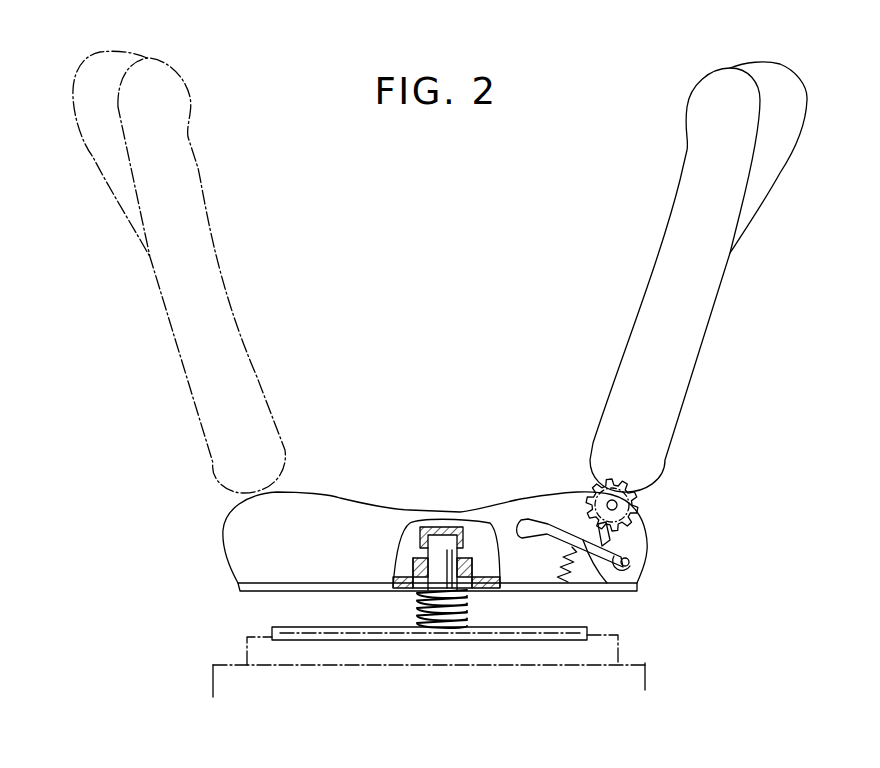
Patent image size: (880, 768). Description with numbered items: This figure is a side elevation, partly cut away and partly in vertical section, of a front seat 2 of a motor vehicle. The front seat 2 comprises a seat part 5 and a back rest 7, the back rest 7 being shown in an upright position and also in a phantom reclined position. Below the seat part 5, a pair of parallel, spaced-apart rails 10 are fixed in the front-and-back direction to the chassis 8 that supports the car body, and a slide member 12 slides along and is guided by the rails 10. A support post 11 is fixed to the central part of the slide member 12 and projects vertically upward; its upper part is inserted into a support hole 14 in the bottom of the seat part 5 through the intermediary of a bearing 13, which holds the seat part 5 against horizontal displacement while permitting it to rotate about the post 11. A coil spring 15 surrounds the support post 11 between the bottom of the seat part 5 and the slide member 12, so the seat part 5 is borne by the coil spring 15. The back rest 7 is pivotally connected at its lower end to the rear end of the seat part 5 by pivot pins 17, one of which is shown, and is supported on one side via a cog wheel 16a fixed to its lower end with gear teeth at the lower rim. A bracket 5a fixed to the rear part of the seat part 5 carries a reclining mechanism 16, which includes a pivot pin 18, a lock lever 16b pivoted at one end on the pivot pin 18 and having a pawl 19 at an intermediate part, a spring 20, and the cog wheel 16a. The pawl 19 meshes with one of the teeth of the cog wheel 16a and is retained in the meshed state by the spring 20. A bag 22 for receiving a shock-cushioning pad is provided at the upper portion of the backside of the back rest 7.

The front seat 2 is at (403, 358).
The seat part 5 is at (327, 507).
The bracket 5a is at (633, 573).
The back rest 7 is at (196, 172).
The chassis 8 is at (640, 677).
The rails 10 is at (620, 637).
The support post 11 is at (437, 580).
The slide member 12 is at (313, 630).
The bearing 13 is at (423, 570).
The support hole 14 is at (443, 536).
The coil spring 15 is at (473, 622).
The reclining mechanism 16 is at (627, 542).
The cog wheel 16a is at (640, 513).
The lock lever 16b is at (552, 525).
The pivot pins 17 is at (618, 503).
The pivot pin 18 is at (634, 562).
The pawl 19 is at (590, 532).
The spring 20 is at (560, 568).
The bag 22 is at (97, 153).